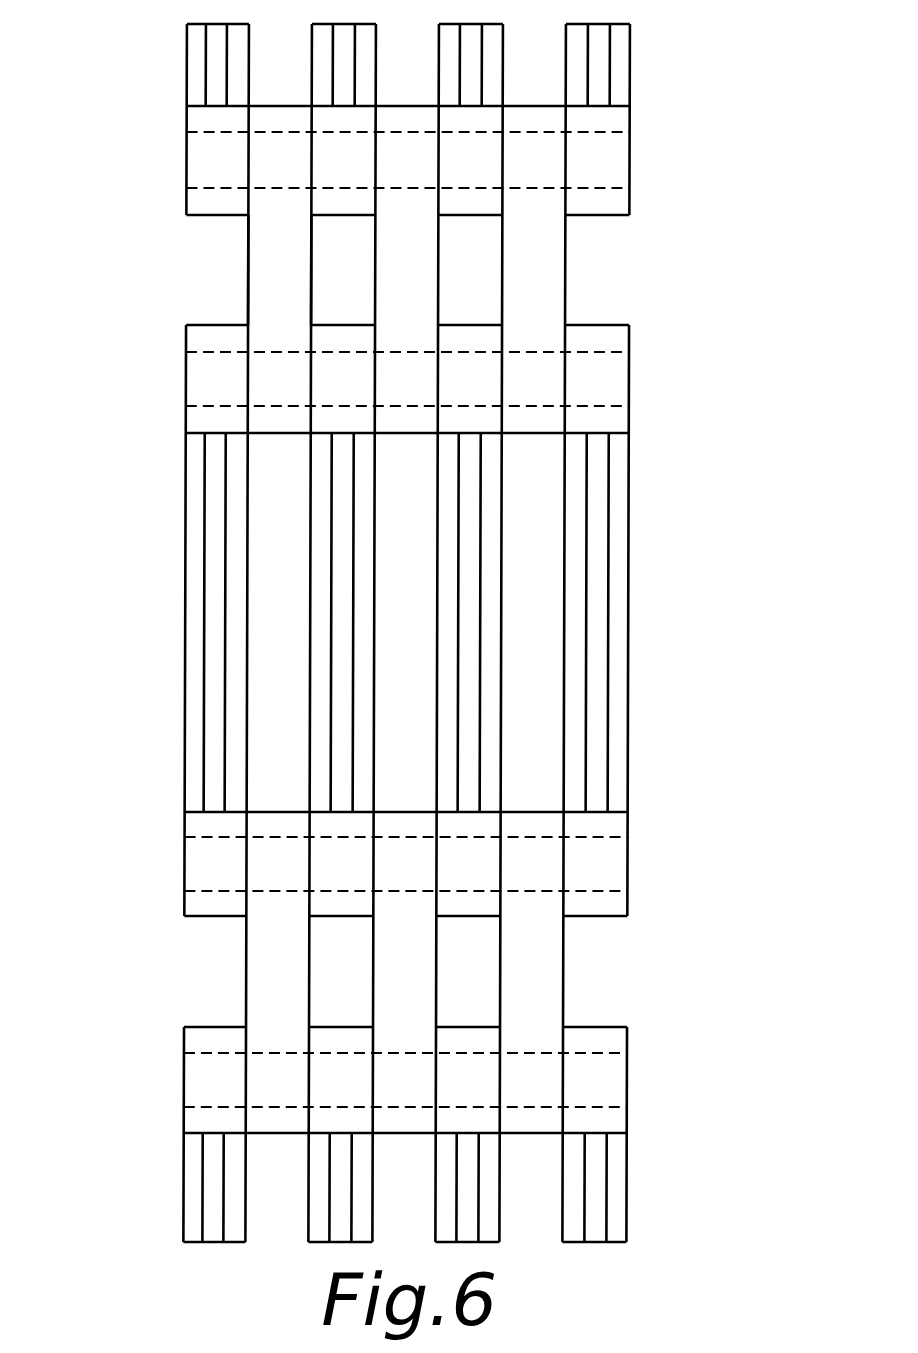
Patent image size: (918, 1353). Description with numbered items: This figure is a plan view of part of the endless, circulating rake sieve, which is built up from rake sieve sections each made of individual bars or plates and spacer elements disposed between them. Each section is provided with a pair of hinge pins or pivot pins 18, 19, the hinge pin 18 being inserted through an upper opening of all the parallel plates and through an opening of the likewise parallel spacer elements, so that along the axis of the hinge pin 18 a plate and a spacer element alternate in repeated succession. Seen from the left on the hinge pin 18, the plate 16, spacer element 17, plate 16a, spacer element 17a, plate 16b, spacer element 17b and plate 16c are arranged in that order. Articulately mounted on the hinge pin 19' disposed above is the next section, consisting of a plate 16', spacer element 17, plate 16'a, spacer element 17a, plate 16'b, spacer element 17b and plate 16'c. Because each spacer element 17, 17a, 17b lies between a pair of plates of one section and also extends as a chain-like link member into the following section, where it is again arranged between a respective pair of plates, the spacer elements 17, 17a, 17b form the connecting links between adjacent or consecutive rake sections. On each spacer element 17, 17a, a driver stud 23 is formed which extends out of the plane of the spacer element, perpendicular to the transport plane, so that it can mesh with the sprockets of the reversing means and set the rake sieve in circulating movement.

The plate 16 is at (165, 622).
The plate 16a is at (322, 597).
The plate 16b is at (472, 567).
The plate 16c is at (602, 705).
The plate 16' is at (179, 65).
The plate 16'a is at (241, 54).
The plate 16'b is at (578, 56).
The plate 16'c is at (643, 65).
The spacer element 17 is at (255, 297).
The spacer element 17a is at (413, 256).
The spacer element 17b is at (548, 300).
The hinge pin 18 is at (618, 372).
The hinge pin 19 is at (453, 864).
The hinge pin 19' is at (472, 160).
The driver stud 23 is at (272, 262).